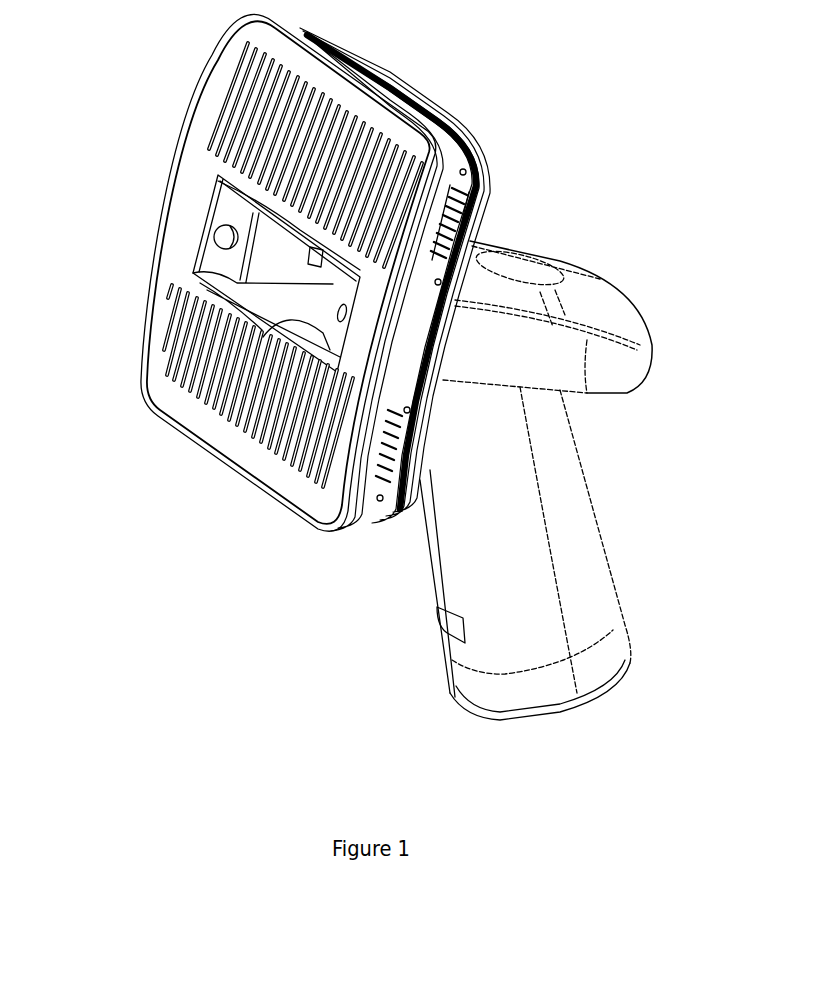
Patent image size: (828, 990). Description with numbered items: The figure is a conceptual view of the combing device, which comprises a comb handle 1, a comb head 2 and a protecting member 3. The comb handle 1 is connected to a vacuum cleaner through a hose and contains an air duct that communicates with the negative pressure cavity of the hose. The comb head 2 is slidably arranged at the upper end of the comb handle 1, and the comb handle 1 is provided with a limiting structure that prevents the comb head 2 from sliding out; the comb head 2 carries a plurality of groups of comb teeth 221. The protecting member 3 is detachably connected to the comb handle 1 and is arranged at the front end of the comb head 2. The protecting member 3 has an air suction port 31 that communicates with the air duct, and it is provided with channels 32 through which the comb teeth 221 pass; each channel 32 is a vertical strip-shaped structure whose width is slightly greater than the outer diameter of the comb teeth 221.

The comb handle 1 is at (490, 555).
The comb head 2 is at (513, 335).
The comb tooth 221 is at (460, 207).
The protecting member 3 is at (193, 215).
The air suction port 31 is at (253, 300).
The channel 32 is at (212, 130).